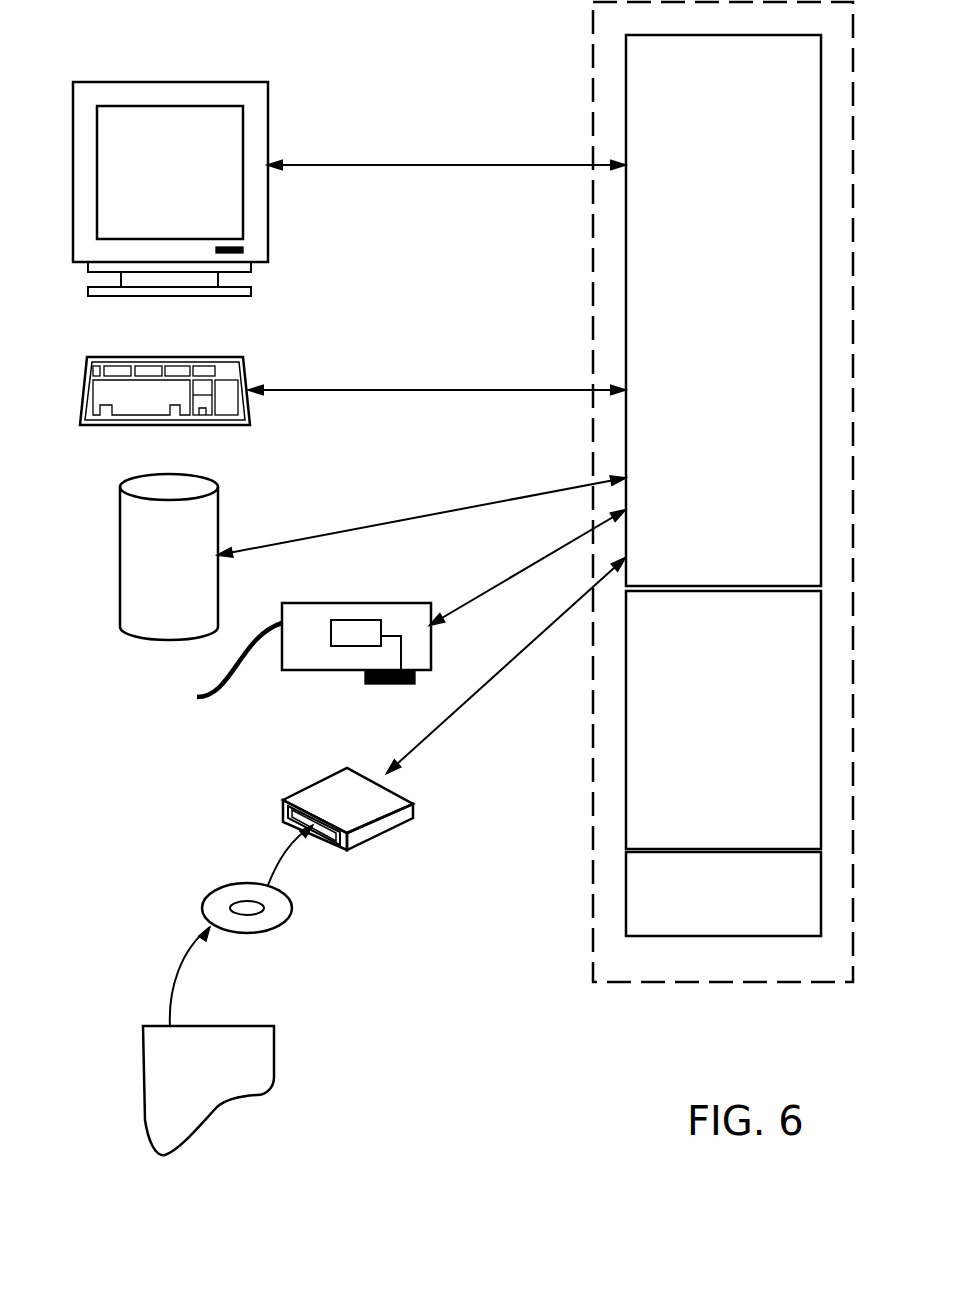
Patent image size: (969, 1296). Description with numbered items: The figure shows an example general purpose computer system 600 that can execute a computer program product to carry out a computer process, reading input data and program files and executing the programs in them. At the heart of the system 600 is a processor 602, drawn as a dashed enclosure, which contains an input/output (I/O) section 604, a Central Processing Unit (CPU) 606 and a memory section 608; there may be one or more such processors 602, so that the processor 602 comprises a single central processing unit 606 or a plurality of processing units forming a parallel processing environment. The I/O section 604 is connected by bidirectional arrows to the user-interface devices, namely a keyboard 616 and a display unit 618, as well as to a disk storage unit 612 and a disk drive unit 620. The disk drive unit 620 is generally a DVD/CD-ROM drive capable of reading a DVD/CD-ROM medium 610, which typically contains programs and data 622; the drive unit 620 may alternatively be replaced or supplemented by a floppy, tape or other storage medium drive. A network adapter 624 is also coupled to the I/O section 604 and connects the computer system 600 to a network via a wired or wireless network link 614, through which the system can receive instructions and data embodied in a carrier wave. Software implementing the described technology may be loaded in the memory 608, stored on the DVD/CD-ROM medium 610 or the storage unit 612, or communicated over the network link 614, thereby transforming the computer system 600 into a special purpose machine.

The general purpose computer system 600 is at (505, 1020).
The processor 602 is at (593, 67).
The input/output (I/O) section 604 is at (723, 310).
The central processing unit (CPU) 606 is at (723, 720).
The memory section 608 is at (723, 894).
The DVD/CD-ROM medium 610 is at (217, 890).
The disk storage unit 612 is at (120, 507).
The network link 614 is at (222, 700).
The keyboard 616 is at (125, 357).
The display unit 618 is at (138, 82).
The disk drive unit 620 is at (332, 802).
The programs and data 622 is at (274, 1048).
The network adapter 624 is at (333, 672).